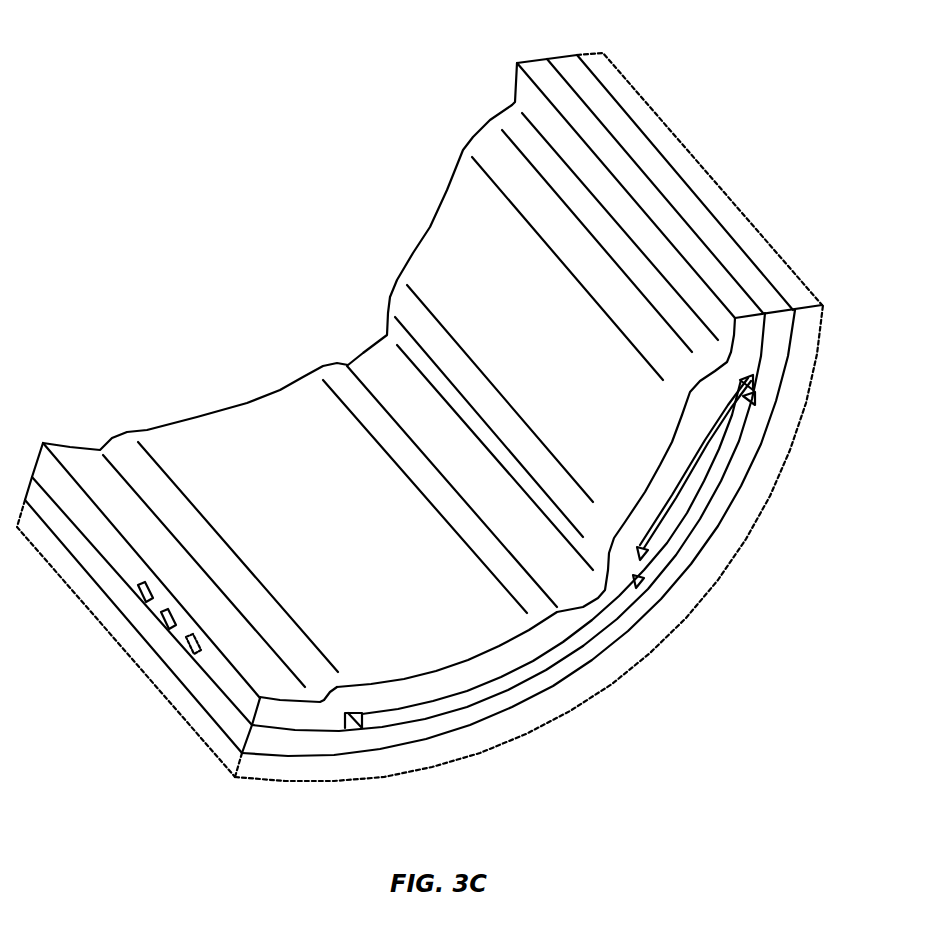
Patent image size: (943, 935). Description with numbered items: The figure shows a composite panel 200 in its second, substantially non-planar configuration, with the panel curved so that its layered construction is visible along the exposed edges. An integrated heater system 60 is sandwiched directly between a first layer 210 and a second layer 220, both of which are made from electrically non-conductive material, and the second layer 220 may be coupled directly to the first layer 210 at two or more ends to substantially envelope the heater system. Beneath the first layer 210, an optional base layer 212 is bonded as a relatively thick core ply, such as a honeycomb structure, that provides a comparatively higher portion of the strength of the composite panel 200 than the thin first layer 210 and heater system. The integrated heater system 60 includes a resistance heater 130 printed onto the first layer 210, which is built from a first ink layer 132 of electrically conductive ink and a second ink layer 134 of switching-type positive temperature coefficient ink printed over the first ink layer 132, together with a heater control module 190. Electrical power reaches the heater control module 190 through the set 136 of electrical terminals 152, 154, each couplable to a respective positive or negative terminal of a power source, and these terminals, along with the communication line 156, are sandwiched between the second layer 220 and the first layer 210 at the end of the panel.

The composite panel 200 is at (679, 78).
The first layer 210 is at (770, 343).
The base layer 212 is at (623, 657).
The resistance heater 130 is at (745, 437).
The first ink layer 132 is at (722, 460).
The second ink layer 134 is at (677, 507).
The heater control module 190 is at (467, 712).
The integrated heater system 60 is at (398, 730).
The second layer 220 is at (303, 715).
The set of electrical terminals 136 is at (176, 647).
The electrical terminal 152 is at (138, 586).
The electrical terminal 154 is at (160, 617).
The communication line 156 is at (200, 652).